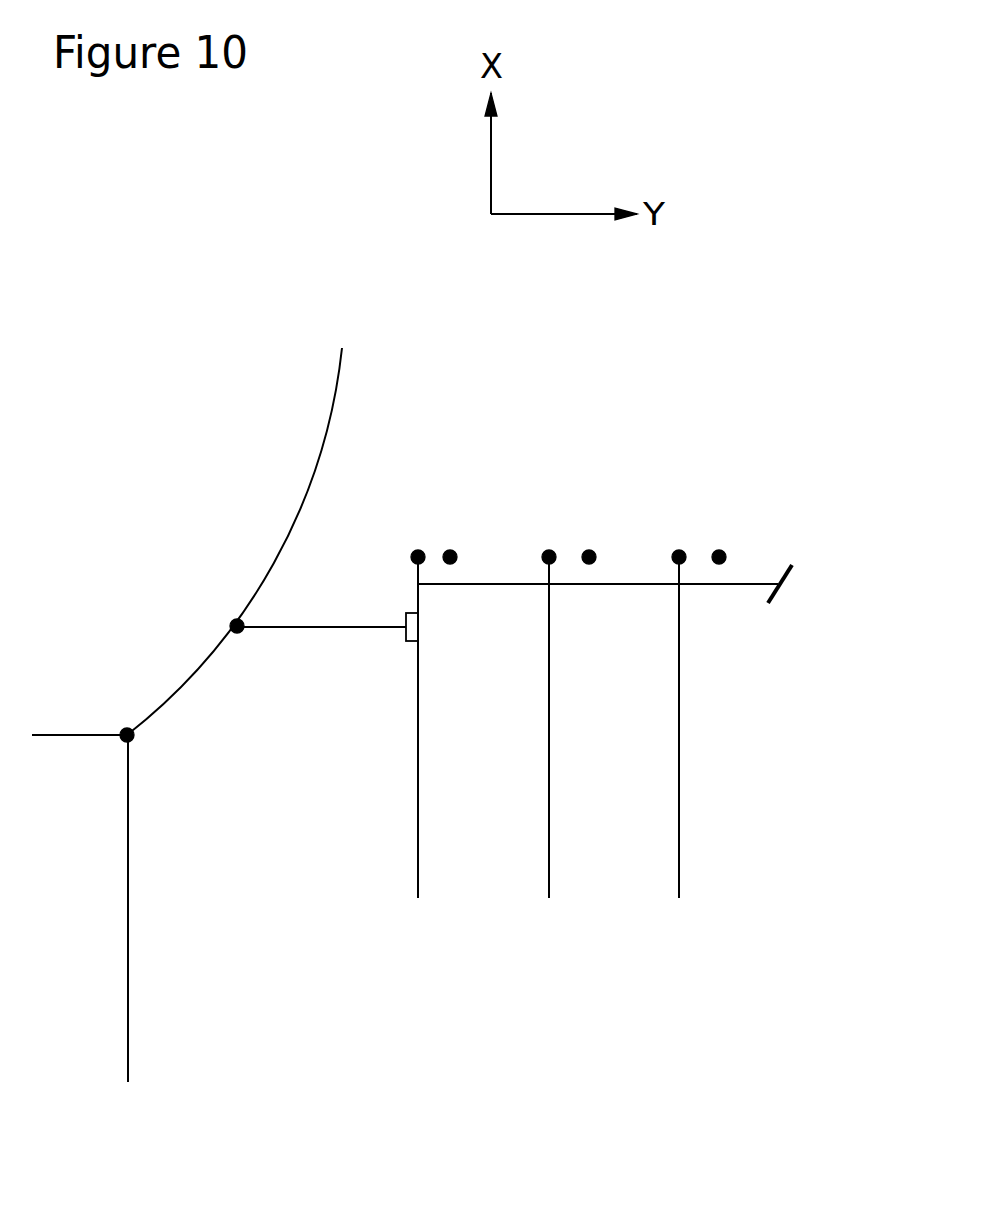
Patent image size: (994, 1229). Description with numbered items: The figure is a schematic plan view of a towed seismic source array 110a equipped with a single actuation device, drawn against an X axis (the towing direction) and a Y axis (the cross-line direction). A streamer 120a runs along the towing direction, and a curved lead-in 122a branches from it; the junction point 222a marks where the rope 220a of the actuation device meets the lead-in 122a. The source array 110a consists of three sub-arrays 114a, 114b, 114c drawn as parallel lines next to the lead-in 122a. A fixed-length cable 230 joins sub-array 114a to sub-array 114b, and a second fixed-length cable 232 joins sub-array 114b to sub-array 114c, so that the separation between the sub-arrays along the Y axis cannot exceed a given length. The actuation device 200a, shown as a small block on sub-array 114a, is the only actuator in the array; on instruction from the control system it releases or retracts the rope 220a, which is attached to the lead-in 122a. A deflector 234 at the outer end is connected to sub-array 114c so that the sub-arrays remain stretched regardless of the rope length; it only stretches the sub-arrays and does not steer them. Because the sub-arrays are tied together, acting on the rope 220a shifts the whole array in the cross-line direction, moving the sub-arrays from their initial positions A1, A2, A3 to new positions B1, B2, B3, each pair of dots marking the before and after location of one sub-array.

The source array 110a is at (563, 343).
The streamer 120a is at (128, 992).
The lead-in 122a is at (298, 507).
The transition point 222a is at (234, 620).
The rope 220a is at (304, 630).
The actuation device 200a is at (405, 630).
The first sub-array 114a is at (418, 799).
The second sub-array 114b is at (549, 795).
The third sub-array 114c is at (679, 798).
The cable 230 is at (485, 582).
The cable 232 is at (621, 582).
The deflector 234 is at (780, 600).
The initial position of first sub-array A1 is at (411, 552).
The new position of first sub-array B1 is at (449, 549).
The initial position of second sub-array A2 is at (549, 549).
The new position of second sub-array B2 is at (590, 549).
The initial position of third sub-array A3 is at (682, 549).
The new position of third sub-array B3 is at (724, 550).